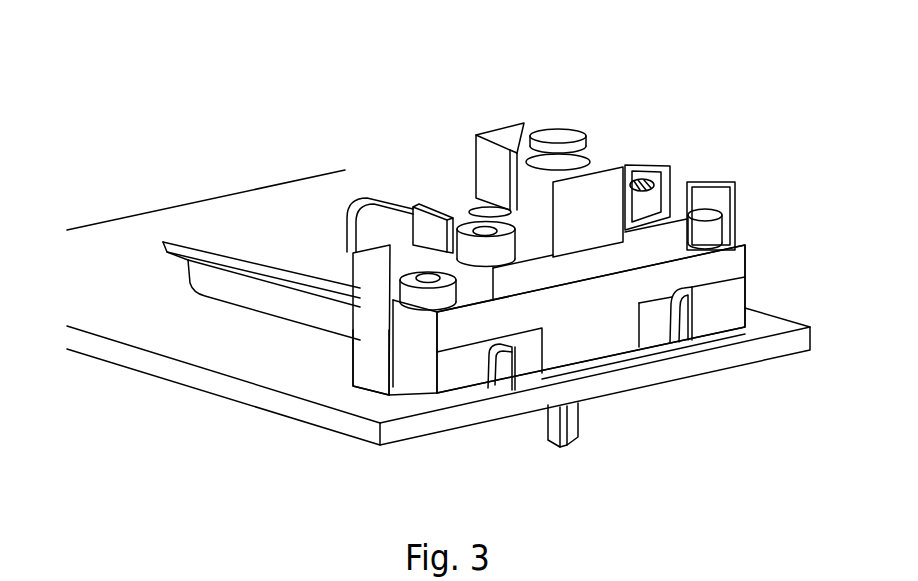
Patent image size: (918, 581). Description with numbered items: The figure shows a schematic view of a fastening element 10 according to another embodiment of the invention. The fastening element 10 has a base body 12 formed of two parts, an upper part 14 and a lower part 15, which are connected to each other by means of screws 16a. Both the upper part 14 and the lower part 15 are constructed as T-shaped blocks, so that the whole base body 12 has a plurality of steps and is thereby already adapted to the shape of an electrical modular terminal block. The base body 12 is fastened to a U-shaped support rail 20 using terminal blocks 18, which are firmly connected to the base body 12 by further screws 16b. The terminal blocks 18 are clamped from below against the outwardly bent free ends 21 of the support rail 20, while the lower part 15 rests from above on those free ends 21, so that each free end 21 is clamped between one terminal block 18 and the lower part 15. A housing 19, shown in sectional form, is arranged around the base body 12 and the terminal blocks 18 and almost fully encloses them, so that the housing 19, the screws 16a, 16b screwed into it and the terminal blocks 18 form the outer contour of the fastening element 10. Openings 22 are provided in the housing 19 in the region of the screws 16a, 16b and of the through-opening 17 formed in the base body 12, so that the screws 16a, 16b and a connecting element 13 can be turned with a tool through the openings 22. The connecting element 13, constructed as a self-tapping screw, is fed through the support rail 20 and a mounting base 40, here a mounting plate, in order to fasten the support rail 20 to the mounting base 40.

The fastening element 10 is at (683, 115).
The base body 12 is at (745, 268).
The connecting element 13 is at (578, 414).
The upper part 14 is at (597, 245).
The lower part 15 is at (597, 332).
The screws 16a is at (445, 218).
The screws 16b is at (346, 228).
The through-opening 17 is at (559, 160).
The terminal blocks 18 is at (462, 380).
The housing 19 is at (372, 340).
The support rail 20 is at (240, 287).
The free ends 21 is at (489, 388).
The openings 22 is at (637, 150).
The mounting base 40 is at (148, 320).